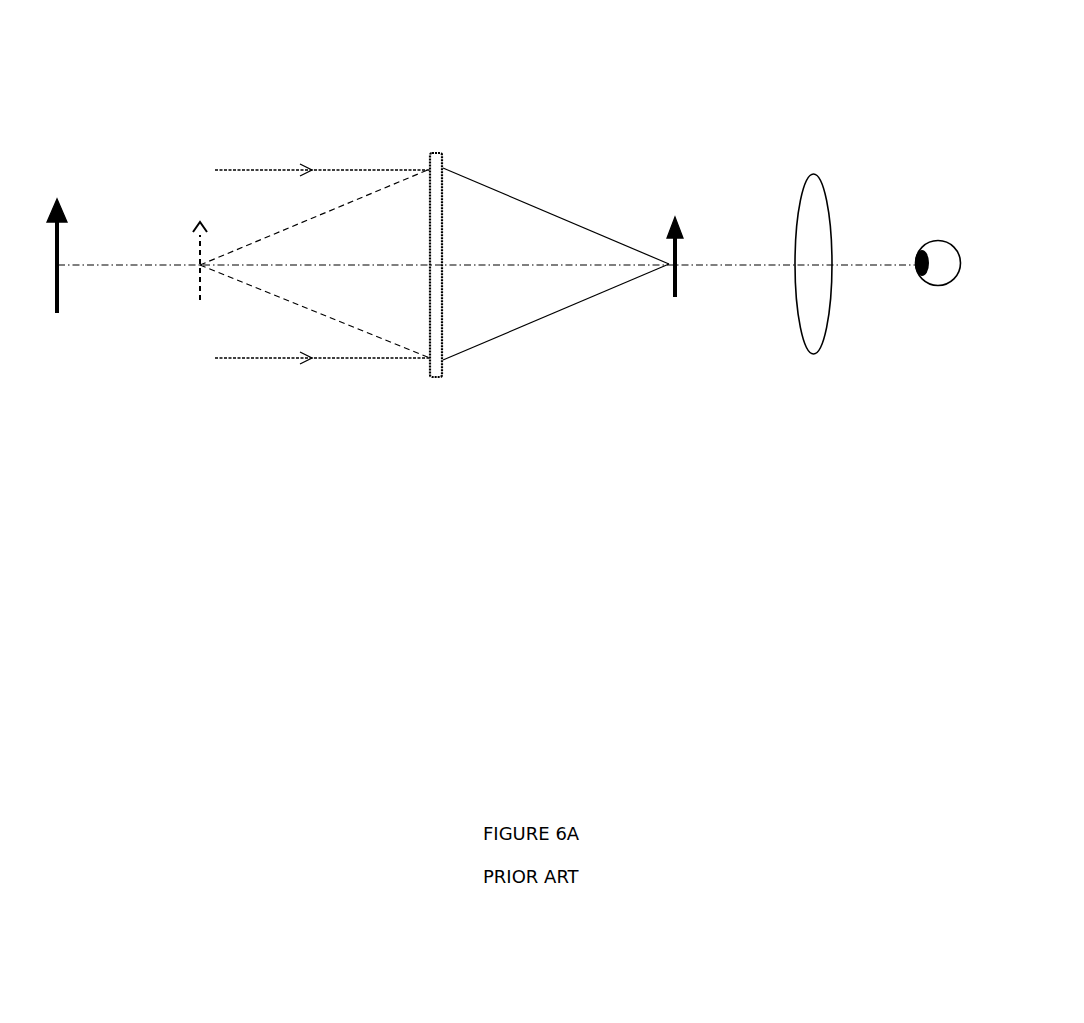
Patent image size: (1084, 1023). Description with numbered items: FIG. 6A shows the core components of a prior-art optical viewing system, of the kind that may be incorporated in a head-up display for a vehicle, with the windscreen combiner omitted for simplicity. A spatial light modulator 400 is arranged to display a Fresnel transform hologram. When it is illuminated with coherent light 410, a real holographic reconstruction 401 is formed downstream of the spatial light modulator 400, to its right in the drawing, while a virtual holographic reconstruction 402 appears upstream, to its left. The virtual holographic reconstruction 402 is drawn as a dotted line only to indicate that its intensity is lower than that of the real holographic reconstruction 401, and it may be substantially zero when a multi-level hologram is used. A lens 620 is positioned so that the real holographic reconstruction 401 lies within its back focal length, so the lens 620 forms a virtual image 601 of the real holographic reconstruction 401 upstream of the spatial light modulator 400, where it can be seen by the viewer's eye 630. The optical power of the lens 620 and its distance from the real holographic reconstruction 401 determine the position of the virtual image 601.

The spatial light modulator 400 is at (437, 150).
The real holographic reconstruction 401 is at (674, 271).
The virtual holographic reconstruction 402 is at (199, 276).
The coherent light 410 is at (326, 359).
The virtual image 601 is at (58, 271).
The lens 620 is at (813, 279).
The eye 630 is at (938, 279).